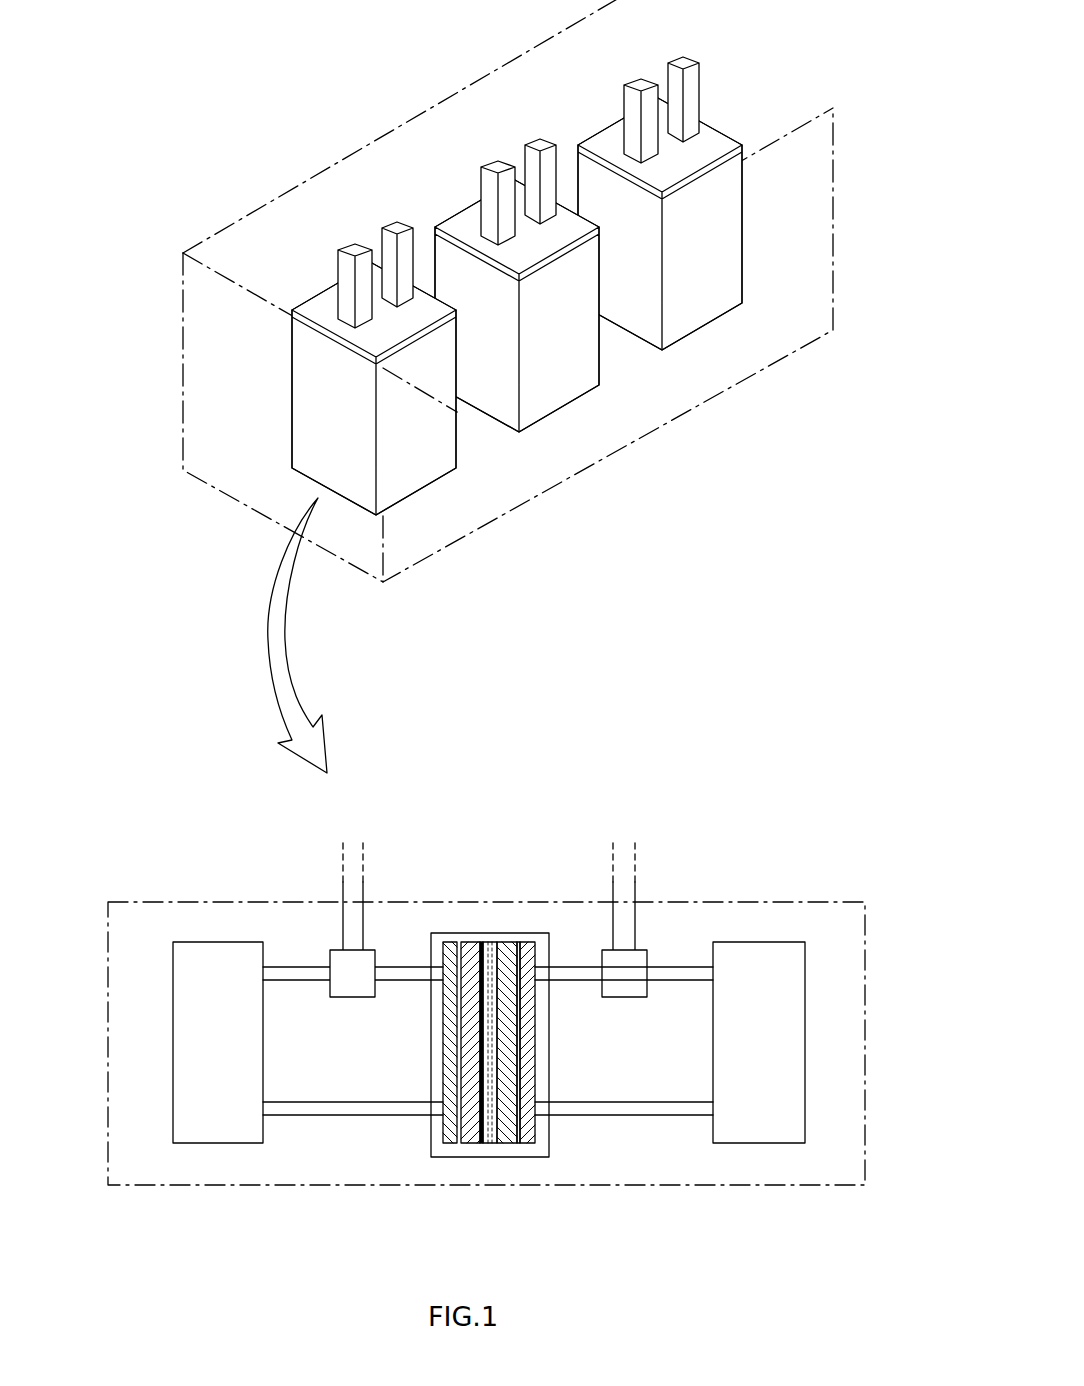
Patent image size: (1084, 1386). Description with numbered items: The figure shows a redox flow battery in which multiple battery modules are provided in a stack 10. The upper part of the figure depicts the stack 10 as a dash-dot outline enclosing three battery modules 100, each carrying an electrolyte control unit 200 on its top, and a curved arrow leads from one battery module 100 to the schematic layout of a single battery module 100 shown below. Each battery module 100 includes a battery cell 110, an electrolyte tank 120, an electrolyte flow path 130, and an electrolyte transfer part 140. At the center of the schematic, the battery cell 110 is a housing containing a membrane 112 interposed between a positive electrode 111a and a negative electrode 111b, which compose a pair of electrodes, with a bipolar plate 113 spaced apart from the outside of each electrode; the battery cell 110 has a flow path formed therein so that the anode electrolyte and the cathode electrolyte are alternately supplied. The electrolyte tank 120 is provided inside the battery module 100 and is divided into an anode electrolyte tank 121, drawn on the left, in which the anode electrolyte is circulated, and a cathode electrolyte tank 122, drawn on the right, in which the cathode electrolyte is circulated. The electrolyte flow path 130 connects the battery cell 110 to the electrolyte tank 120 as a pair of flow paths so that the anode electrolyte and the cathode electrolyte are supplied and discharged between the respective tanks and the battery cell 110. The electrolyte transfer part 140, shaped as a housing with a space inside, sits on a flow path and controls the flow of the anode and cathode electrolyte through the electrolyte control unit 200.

The stack 10 is at (340, 124).
The battery module 100 is at (478, 621).
The electrolyte control unit 200 is at (693, 97).
The battery cell 110 is at (437, 931).
The positive electrode 111a is at (473, 1133).
The negative electrode 111b is at (507, 1133).
The membrane 112 is at (488, 943).
The bipolar plate 113 is at (450, 943).
The electrolyte tank 120 is at (486, 877).
The anode electrolyte tank 121 is at (187, 1005).
The cathode electrolyte tank 122 is at (790, 1025).
The electrolyte flow path 130 is at (678, 973).
The electrolyte transfer part 140 is at (330, 958).